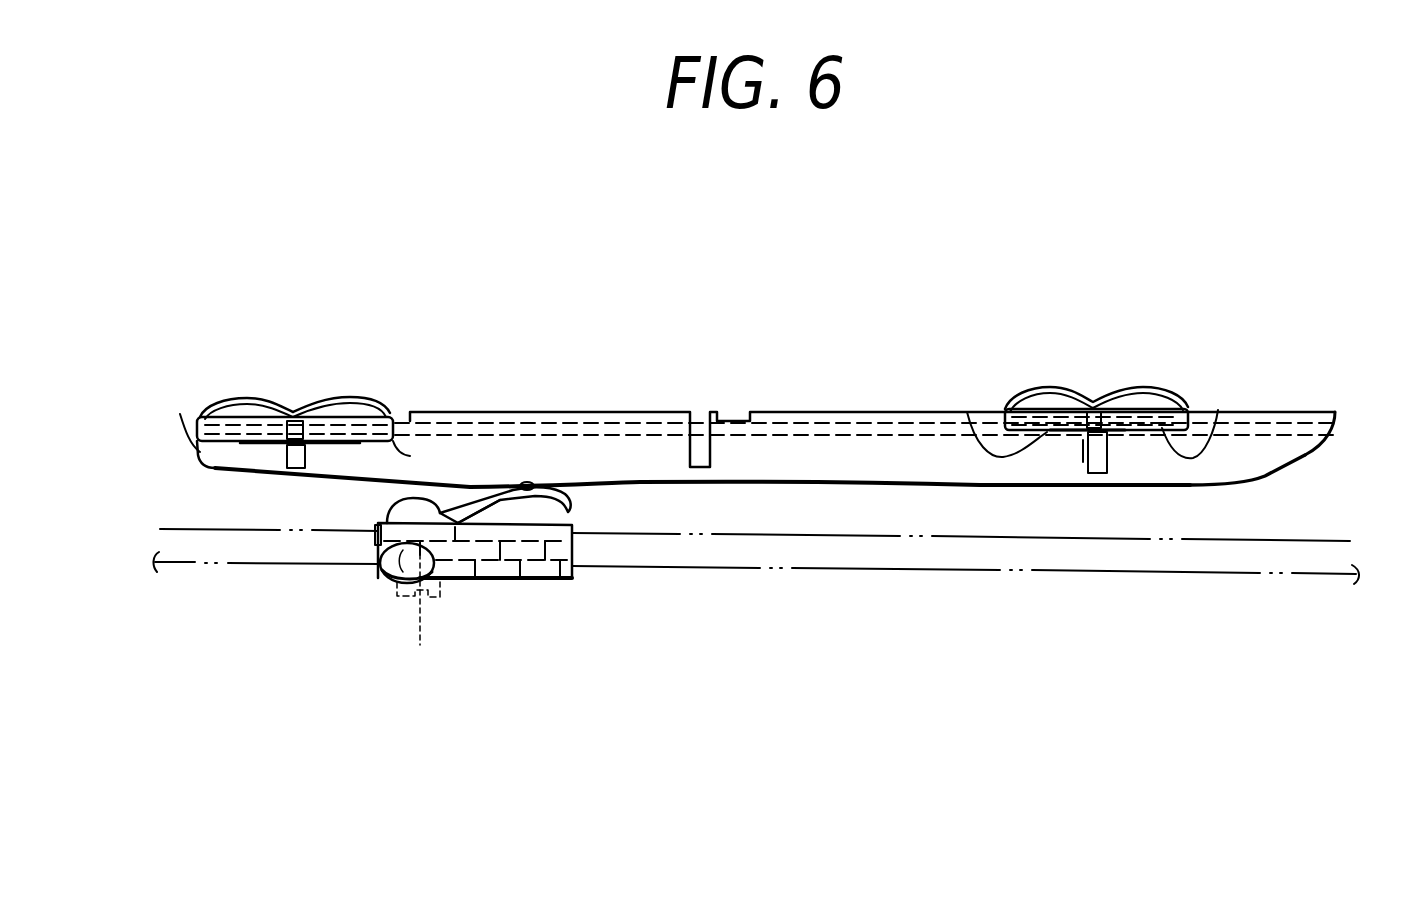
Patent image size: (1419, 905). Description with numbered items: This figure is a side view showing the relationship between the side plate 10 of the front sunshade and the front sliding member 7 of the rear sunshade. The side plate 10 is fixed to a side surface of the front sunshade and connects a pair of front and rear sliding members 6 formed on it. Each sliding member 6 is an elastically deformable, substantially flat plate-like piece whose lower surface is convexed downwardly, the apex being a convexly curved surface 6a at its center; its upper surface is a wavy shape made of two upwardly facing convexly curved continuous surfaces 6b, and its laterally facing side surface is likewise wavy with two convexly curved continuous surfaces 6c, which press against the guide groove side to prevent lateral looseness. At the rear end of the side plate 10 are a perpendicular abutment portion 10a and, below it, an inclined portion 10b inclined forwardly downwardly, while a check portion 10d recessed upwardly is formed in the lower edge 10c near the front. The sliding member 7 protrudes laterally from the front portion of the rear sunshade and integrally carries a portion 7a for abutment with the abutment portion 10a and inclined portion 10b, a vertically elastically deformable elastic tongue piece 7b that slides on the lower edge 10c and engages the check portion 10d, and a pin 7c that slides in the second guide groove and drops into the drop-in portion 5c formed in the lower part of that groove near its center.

The drop-in portion 5c is at (418, 615).
The sliding member 6 is at (1075, 392).
The convexly curved surface 6a is at (1083, 462).
The convexly curved continuous surfaces 6b is at (1147, 388).
The convexly curved continuous surfaces 6c is at (1238, 412).
The sliding member 7 is at (477, 578).
The abutment portion 7a is at (387, 503).
The elastic tongue piece 7b is at (493, 507).
The pin 7c is at (397, 582).
The side plate 10 is at (667, 412).
The abutment portion 10a is at (1337, 412).
The inclined portion 10b is at (1305, 455).
The lower edge 10c is at (755, 485).
The check portion 10d is at (530, 482).